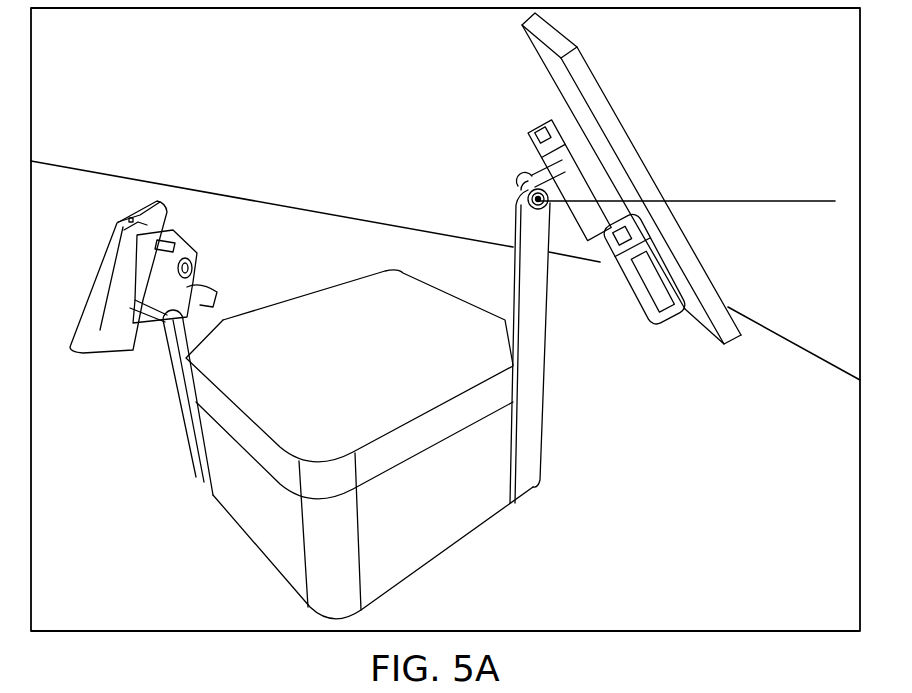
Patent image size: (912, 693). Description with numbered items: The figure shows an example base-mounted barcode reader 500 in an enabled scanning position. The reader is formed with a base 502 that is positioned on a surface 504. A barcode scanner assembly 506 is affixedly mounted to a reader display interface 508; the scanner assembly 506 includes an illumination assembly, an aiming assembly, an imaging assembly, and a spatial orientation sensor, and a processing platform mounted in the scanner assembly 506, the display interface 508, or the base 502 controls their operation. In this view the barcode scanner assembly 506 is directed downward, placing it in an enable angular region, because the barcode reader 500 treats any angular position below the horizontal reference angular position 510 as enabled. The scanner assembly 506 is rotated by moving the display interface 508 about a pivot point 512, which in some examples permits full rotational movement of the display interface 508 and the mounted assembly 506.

The base-mounted barcode reader 500 is at (164, 85).
The base 502 is at (213, 372).
The surface 504 is at (343, 215).
The barcode scanner assembly 506 is at (655, 327).
The reader display interface 508 is at (615, 97).
The horizontal reference angular position 510 is at (822, 201).
The pivot point 512 is at (526, 185).